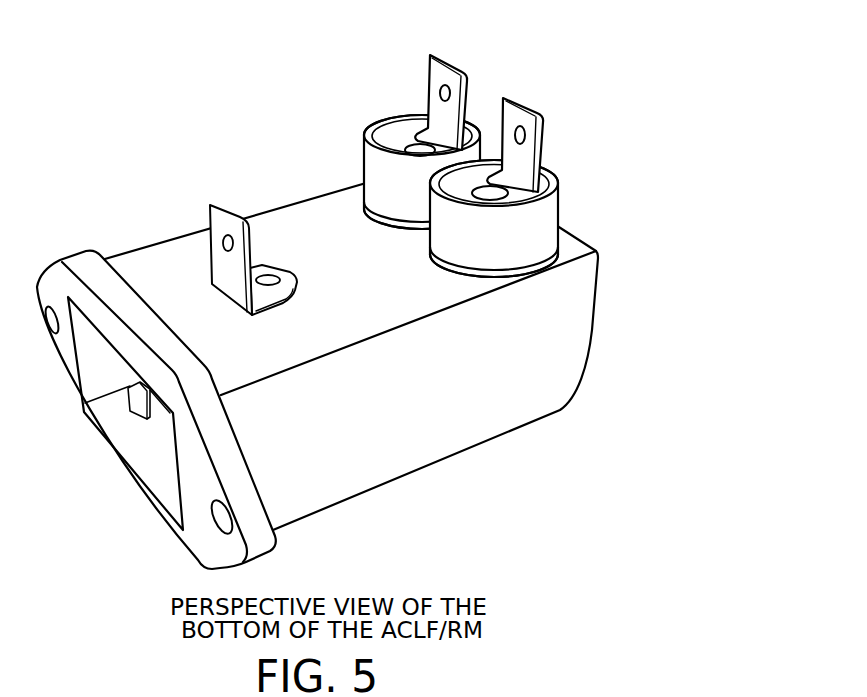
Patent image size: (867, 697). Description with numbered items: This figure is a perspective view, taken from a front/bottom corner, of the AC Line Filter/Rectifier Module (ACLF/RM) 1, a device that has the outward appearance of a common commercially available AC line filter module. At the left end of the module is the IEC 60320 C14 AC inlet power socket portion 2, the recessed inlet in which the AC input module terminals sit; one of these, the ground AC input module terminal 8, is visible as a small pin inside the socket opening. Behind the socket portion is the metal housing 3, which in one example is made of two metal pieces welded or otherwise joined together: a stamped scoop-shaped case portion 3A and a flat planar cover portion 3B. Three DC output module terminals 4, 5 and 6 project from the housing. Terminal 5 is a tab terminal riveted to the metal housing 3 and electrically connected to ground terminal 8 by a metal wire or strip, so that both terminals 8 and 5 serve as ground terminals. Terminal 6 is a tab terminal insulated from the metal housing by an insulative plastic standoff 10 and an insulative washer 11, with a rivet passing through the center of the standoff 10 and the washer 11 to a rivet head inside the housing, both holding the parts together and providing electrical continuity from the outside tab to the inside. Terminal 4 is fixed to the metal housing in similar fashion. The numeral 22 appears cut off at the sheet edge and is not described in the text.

The AC Line Filter/Rectifier Module (ACLF/RM) 1 is at (617, 61).
The IEC 60320 C14 AC inlet power socket portion 2 is at (63, 259).
The metal housing 3 is at (348, 344).
The stamped scoop-shaped case portion 3A is at (409, 390).
The flat planar cover portion 3B is at (347, 217).
The DC output module terminal 4 is at (513, 96).
The DC output module terminal 5 is at (214, 204).
The DC output module terminal 6 is at (439, 53).
The AC input module terminal 8 is at (112, 405).
The insulative plastic standoff 10 is at (402, 172).
The insulative washer 11 is at (363, 205).
The reference numeral (cut off) 22 is at (441, 693).